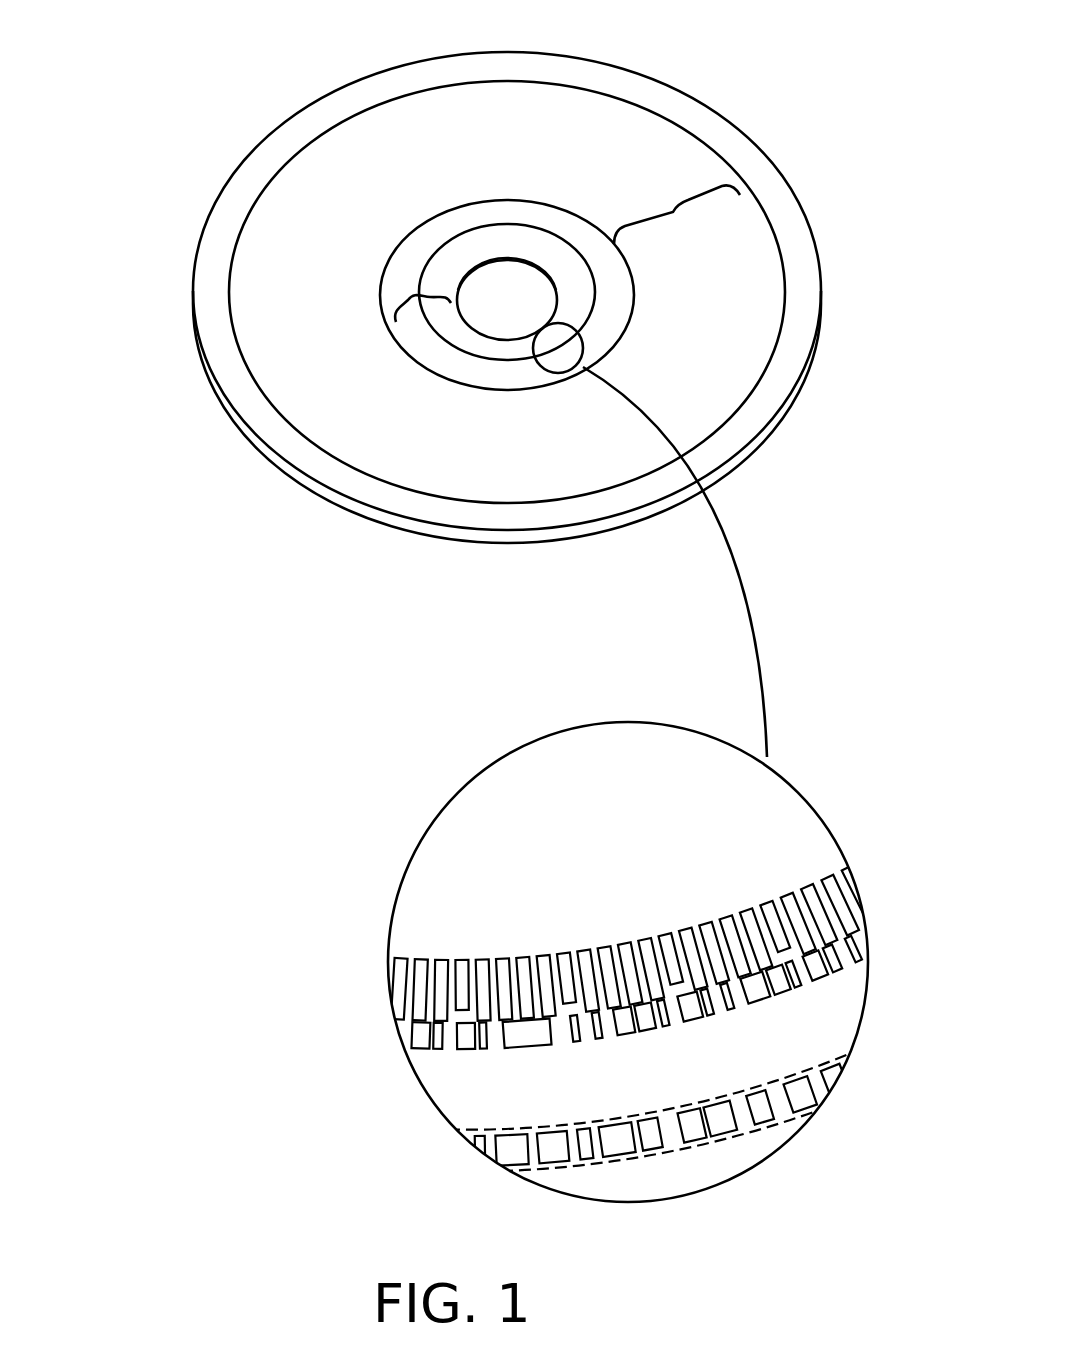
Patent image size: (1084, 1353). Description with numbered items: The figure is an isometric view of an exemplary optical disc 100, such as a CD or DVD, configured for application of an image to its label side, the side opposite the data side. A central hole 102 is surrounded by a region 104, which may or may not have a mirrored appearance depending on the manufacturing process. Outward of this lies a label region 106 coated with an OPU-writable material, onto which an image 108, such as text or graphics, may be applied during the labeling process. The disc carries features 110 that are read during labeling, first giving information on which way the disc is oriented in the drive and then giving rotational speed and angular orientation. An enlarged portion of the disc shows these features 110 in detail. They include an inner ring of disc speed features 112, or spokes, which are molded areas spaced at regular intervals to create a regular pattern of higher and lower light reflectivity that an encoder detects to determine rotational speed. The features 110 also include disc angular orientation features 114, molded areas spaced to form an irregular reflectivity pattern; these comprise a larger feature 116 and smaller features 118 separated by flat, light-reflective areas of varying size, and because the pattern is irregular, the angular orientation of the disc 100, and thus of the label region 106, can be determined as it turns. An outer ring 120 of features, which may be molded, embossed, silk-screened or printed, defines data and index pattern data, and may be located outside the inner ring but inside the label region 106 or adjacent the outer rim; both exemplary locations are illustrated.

The optical disc 100 is at (305, 39).
The central hole 102 is at (498, 293).
The region 104 is at (412, 289).
The label region 106 is at (676, 196).
The image 108 is at (592, 120).
The features 110 is at (597, 288).
The disc speed features 112 is at (552, 958).
The disc angular orientation features 114 is at (695, 1040).
The larger feature 116 is at (520, 1046).
The smaller features 118 is at (574, 1042).
The outer ring 120 is at (226, 358).